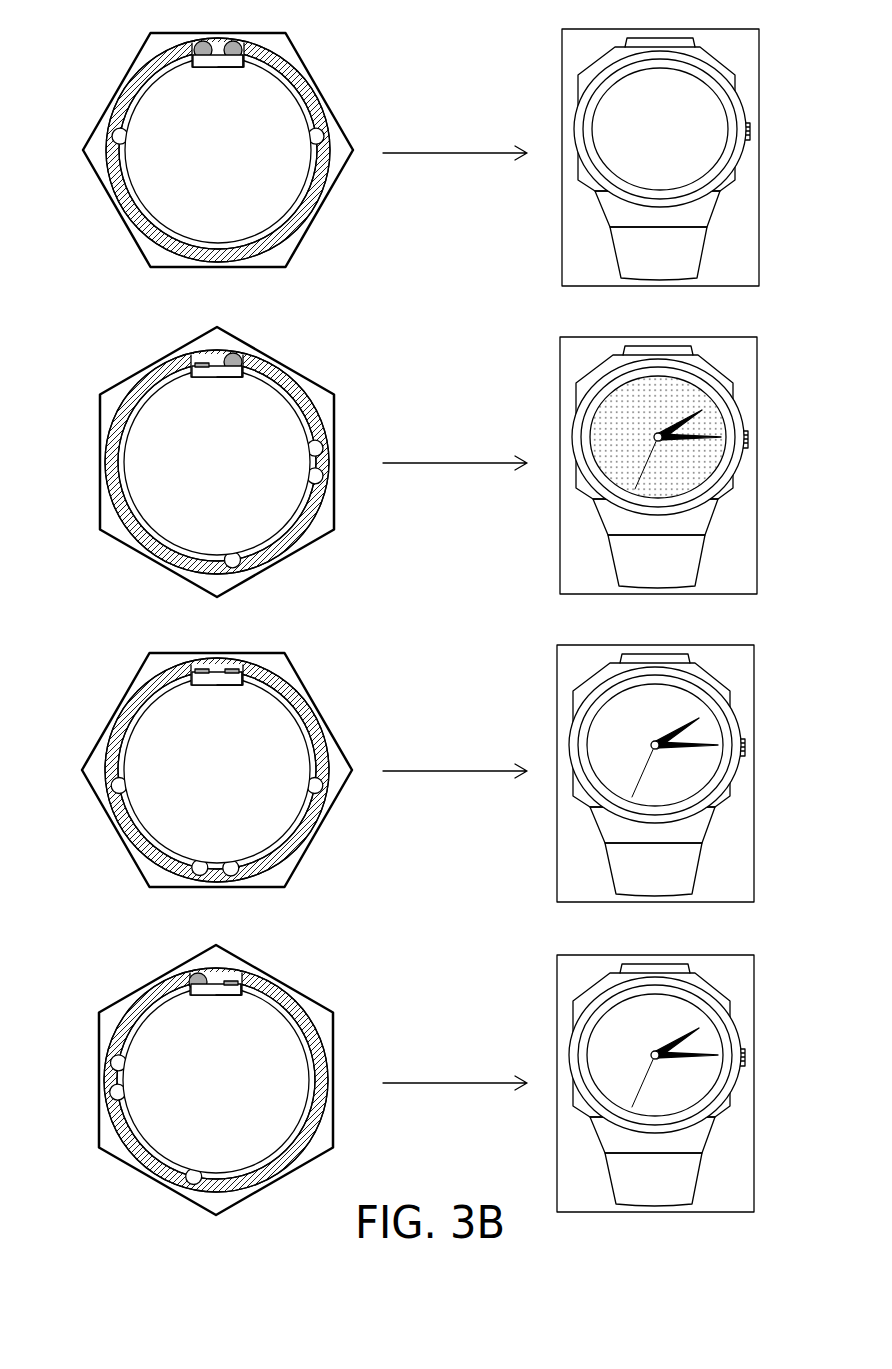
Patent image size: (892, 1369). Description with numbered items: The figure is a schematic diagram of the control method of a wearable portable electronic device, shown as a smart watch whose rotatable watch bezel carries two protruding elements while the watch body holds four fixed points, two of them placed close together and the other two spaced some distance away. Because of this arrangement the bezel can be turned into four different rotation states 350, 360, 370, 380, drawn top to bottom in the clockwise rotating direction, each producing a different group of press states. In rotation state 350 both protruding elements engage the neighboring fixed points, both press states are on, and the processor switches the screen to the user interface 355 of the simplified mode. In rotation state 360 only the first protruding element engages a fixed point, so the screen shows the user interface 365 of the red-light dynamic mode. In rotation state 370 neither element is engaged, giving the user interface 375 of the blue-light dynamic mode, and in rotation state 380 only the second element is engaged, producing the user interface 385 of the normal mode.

The rotation state 350 is at (342, 150).
The user interface 355 is at (695, 157).
The rotation state 360 is at (357, 462).
The user interface 365 is at (693, 465).
The rotation state 370 is at (342, 770).
The user interface 375 is at (691, 773).
The rotation state 380 is at (355, 1080).
The user interface 385 is at (691, 1083).